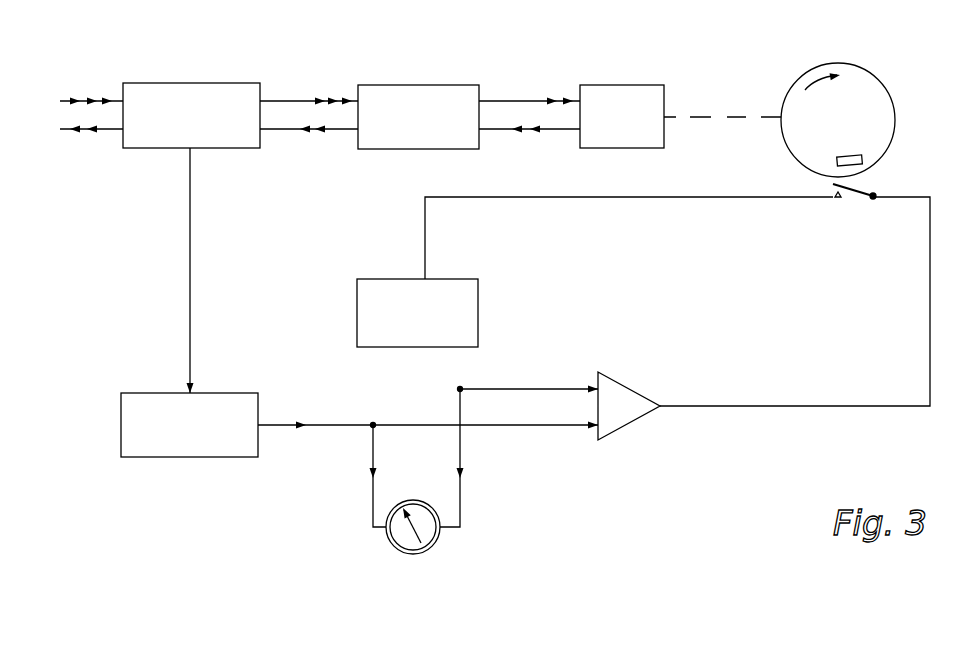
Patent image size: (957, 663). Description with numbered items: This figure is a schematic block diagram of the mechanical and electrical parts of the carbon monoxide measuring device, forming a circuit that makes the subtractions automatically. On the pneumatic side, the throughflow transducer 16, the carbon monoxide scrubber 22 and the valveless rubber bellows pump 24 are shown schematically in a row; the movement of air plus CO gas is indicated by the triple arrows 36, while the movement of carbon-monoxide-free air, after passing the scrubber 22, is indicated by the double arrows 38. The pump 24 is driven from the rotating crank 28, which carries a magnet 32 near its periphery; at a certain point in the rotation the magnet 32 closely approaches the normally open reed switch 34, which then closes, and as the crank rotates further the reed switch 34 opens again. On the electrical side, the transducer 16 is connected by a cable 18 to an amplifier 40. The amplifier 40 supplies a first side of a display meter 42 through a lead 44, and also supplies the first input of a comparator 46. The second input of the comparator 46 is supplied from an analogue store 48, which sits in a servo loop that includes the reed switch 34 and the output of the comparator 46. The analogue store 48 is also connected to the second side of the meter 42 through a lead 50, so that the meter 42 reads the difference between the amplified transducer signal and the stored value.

The throughflow transducer 16 is at (188, 83).
The cable 18 is at (190, 237).
The carbon monoxide scrubber 22 is at (415, 85).
The valveless rubber bellows pump 24 is at (625, 85).
The crank 28 is at (892, 99).
The magnet 32 is at (853, 156).
The reed switch 34 is at (856, 187).
The triple arrows 36 is at (72, 101).
The double arrows 38 is at (112, 132).
The amplifier 40 is at (225, 393).
The display meter 42 is at (388, 539).
The lead 44 is at (372, 460).
The comparator 46 is at (632, 387).
The analogue store 48 is at (463, 279).
The lead 50 is at (462, 460).